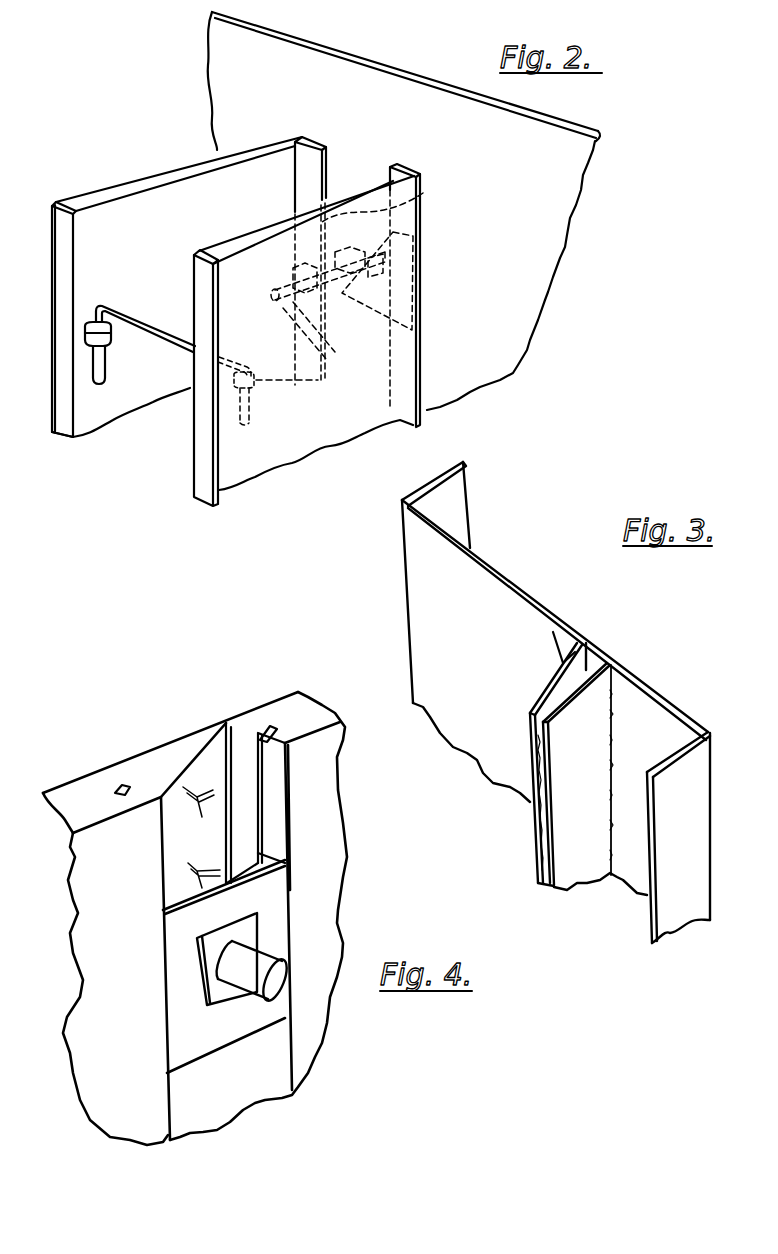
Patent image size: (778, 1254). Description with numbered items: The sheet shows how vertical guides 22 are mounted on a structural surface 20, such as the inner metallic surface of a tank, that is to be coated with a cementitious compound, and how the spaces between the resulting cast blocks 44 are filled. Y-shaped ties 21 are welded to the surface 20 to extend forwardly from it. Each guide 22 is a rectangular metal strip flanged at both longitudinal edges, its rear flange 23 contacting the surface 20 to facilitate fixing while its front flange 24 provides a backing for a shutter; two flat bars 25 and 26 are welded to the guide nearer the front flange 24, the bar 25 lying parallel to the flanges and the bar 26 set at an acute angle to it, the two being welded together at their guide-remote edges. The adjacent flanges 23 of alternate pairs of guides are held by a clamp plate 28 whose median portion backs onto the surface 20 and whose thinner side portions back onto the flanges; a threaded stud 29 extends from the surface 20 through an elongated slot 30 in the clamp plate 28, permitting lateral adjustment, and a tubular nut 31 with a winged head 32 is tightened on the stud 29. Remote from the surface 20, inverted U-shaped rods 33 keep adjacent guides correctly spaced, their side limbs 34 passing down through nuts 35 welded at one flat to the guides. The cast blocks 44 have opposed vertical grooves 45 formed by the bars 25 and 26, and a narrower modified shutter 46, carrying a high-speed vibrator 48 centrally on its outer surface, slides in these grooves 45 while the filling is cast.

In FIG. 2, the structural surface 20 is at (548, 247).
In FIG. 4, the structural surface 20 is at (163, 760).
In FIG. 4, the Y-shaped ties 21 is at (234, 805).
In FIG. 2, the vertical guides 22 is at (245, 160).
In FIG. 3, the vertical guides 22 is at (485, 605).
In FIG. 2, the rear flange 23 is at (310, 153).
In FIG. 3, the rear flange 23 is at (453, 505).
In FIG. 2, the front flange 24 is at (60, 382).
In FIG. 3, the front flange 24 is at (690, 768).
In FIG. 3, the flat bar 25 is at (595, 693).
In FIG. 3, the flat bar 26 is at (553, 632).
In FIG. 2, the clamp plate 28 is at (423, 193).
In FIG. 2, the threaded stud 29 is at (318, 380).
In FIG. 2, the elongated slot 30 is at (413, 235).
In FIG. 2, the tubular nut 31 is at (407, 308).
In FIG. 2, the winged head 32 is at (313, 327).
In FIG. 2, the rods 33 is at (170, 342).
In FIG. 2, the side limbs 34 is at (101, 372).
In FIG. 2, the nuts 35 is at (85, 332).
In FIG. 4, the cast blocks 44 is at (137, 941).
In FIG. 4, the vertical grooves 45 is at (120, 792).
In FIG. 4, the modified shutter 46 is at (217, 1047).
In FIG. 4, the high-speed vibrator 48 is at (258, 957).